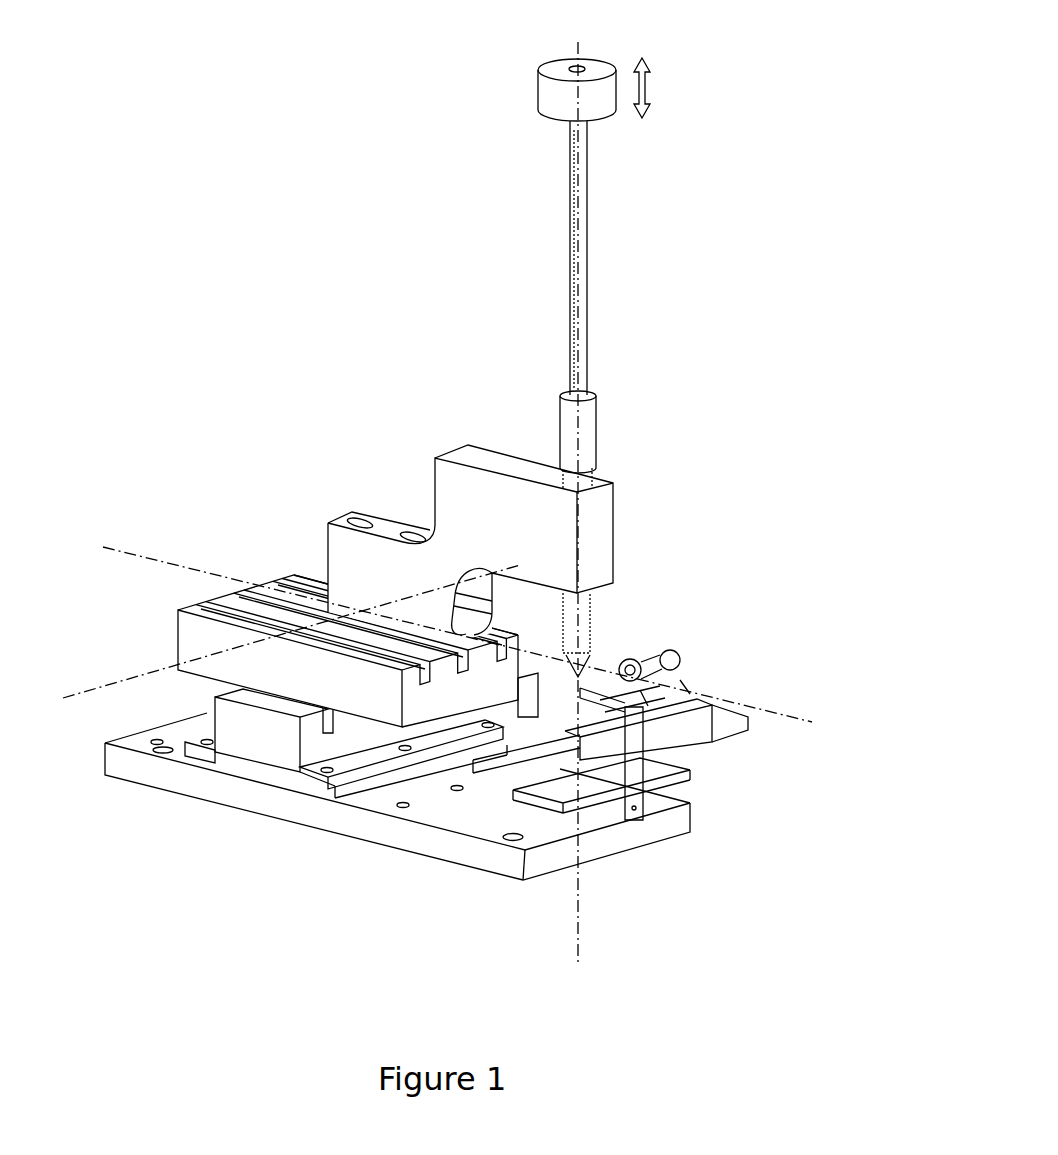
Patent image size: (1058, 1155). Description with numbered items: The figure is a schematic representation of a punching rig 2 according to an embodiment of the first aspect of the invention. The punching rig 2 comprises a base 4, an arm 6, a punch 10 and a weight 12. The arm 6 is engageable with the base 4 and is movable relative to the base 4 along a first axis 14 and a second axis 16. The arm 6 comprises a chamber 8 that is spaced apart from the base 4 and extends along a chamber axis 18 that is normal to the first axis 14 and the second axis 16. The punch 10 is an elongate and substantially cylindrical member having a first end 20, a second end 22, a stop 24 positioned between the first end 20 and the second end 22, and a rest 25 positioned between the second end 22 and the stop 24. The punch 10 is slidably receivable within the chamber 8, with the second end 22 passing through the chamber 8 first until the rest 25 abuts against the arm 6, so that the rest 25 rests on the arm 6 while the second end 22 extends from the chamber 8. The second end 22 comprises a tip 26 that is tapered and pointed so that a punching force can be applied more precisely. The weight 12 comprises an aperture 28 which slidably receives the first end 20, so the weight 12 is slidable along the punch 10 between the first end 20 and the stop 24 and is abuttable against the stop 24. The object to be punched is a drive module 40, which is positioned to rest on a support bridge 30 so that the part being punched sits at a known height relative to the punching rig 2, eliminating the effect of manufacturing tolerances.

The punching rig 2 is at (368, 282).
The base 4 is at (347, 808).
The arm 6 is at (445, 470).
The chamber 8 is at (594, 476).
The punch 10 is at (548, 380).
The weight 12 is at (556, 96).
The first axis 14 is at (218, 573).
The second axis 16 is at (132, 678).
The chamber axis 18 is at (585, 903).
The first end 20 is at (588, 120).
The second end 22 is at (583, 658).
The stop 24 is at (594, 392).
The rest 25 is at (566, 468).
The tip 26 is at (590, 670).
The aperture 28 is at (585, 69).
The support bridge 30 is at (647, 768).
The drive module 40 is at (712, 707).